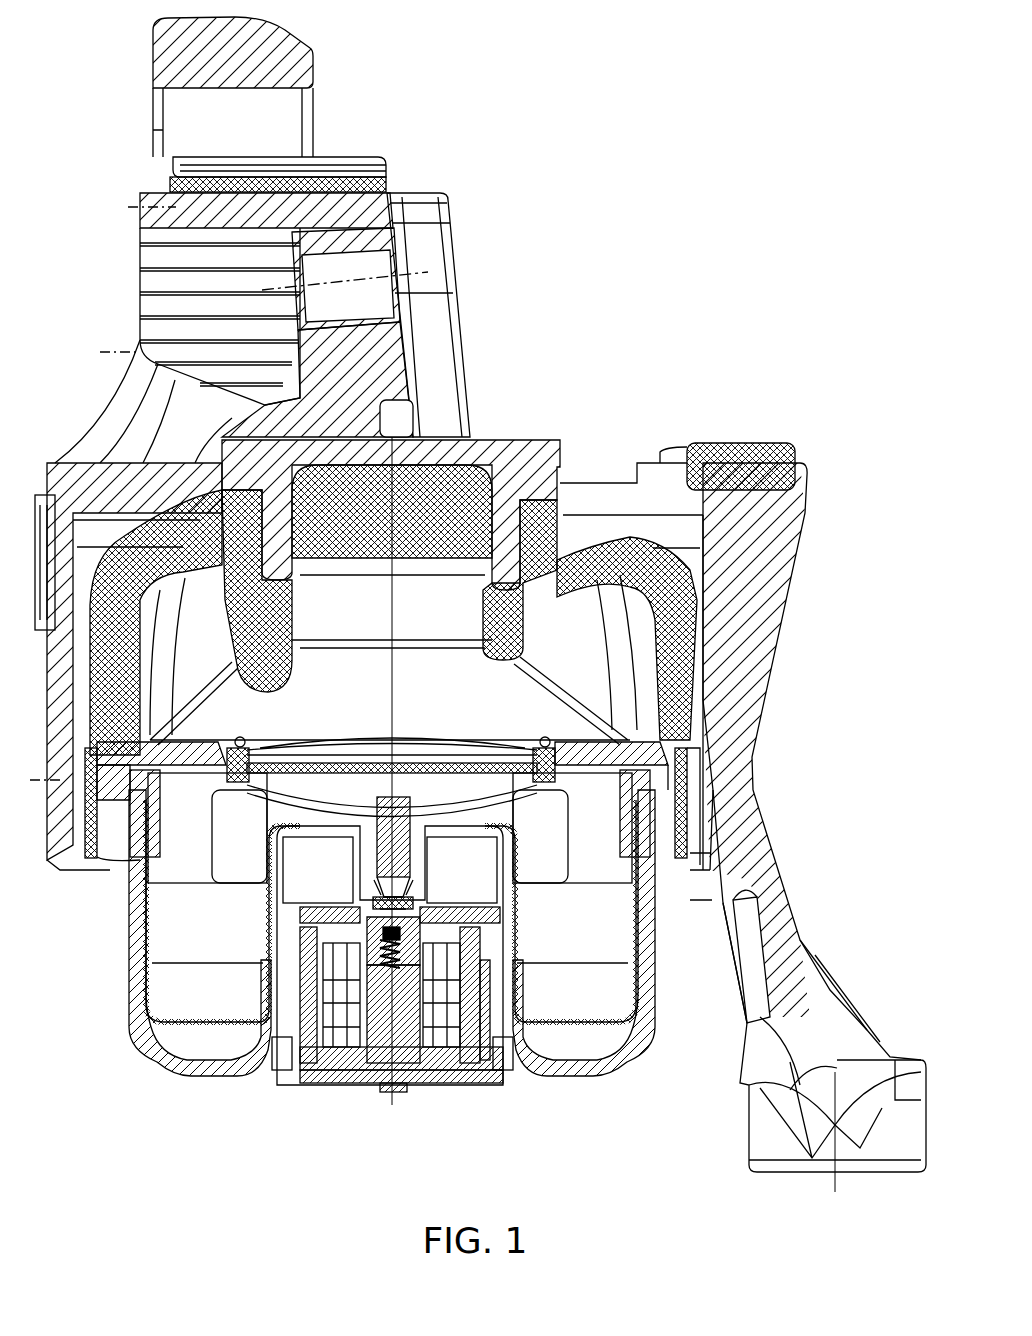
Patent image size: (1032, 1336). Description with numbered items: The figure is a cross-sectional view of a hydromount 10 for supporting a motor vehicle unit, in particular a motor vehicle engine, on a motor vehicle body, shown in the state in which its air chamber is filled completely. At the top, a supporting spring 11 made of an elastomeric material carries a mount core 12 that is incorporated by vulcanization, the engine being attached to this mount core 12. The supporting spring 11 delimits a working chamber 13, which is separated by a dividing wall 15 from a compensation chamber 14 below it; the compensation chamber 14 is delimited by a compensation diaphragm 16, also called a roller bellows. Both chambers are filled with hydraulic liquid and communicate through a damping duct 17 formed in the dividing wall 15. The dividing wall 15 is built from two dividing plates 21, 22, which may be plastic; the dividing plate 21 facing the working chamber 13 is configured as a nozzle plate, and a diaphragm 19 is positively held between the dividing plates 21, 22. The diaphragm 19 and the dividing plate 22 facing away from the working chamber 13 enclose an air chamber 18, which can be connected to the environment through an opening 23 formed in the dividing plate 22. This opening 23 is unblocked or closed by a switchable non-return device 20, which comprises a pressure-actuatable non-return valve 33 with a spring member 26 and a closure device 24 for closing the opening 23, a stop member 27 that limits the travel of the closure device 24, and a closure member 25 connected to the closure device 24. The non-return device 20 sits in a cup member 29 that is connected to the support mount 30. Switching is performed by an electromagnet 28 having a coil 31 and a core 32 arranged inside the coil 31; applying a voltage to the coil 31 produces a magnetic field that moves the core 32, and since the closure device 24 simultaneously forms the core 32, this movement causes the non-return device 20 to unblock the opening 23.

The hydromount 10 is at (594, 278).
The supporting spring 11 is at (472, 470).
The mount core 12 is at (537, 455).
The working chamber 13 is at (520, 697).
The compensation chamber 14 is at (593, 945).
The dividing wall 15 is at (226, 728).
The compensation diaphragm 16 is at (148, 918).
The damping duct 17 is at (178, 820).
The air chamber 18 is at (414, 780).
The diaphragm 19 is at (322, 757).
The switchable non-return device 20 is at (420, 932).
The dividing plate 21 is at (196, 752).
The dividing plate 22 is at (522, 793).
The opening 23 is at (383, 810).
The closure device 24 is at (375, 955).
The closure member 25 is at (388, 893).
The spring member 26 is at (370, 920).
The stop member 27 is at (400, 998).
The electromagnet 28 is at (297, 1067).
The cup member 29 is at (203, 1063).
The support mount 30 is at (716, 778).
The coil 31 is at (452, 1012).
The core 32 is at (368, 935).
The non-return valve 33 is at (418, 908).